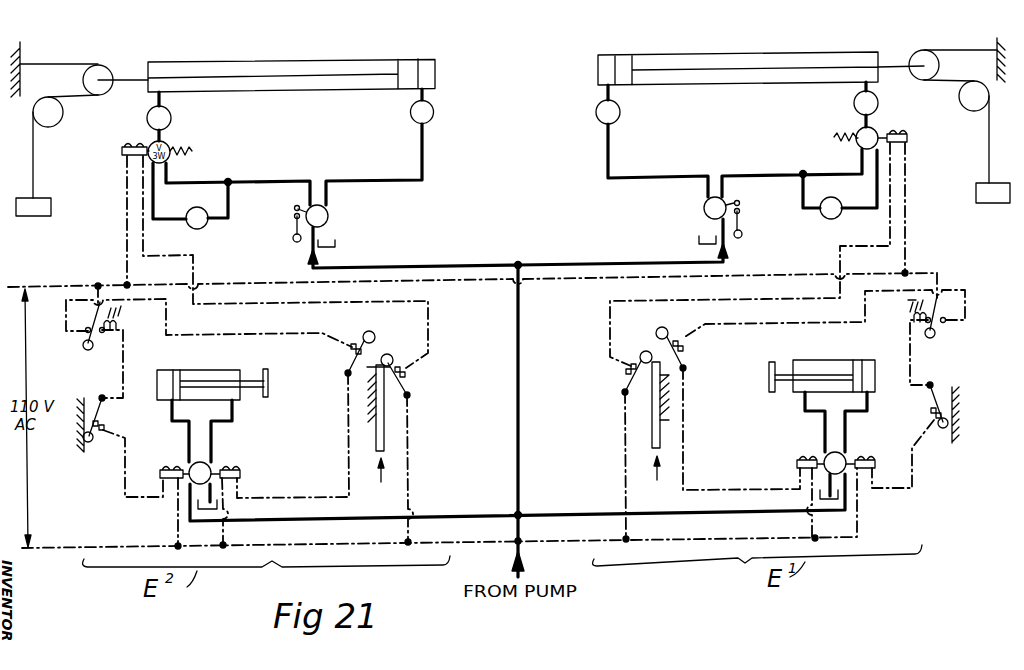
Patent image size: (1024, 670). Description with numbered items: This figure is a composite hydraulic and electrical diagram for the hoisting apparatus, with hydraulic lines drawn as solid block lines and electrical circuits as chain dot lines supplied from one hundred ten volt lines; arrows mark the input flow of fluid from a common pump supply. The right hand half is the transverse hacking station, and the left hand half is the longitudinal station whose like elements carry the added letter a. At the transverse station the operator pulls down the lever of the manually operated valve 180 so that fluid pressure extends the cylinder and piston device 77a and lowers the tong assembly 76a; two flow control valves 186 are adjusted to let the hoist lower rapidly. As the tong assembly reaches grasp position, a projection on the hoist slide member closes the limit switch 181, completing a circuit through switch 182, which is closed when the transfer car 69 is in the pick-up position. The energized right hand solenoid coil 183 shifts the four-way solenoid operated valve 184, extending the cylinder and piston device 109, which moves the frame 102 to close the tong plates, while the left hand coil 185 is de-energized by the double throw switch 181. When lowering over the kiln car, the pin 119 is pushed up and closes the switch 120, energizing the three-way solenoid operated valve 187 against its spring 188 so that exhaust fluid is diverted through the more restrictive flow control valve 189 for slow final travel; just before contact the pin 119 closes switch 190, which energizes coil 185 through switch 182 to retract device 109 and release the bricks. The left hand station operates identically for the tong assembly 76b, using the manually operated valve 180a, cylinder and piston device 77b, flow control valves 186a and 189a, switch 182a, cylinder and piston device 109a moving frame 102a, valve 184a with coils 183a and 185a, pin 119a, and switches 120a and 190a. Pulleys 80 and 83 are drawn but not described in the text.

The transfer car 69 is at (22, 50).
The pulley 80 is at (100, 78).
The pulley 83 is at (57, 112).
The tong assembly 76a is at (983, 183).
The tong assembly 76b is at (40, 198).
The cylinder and piston device 77a is at (733, 79).
The cylinder and piston device 77b is at (285, 88).
The flow control valve 186 is at (621, 113).
The flow control valve 186a is at (172, 118).
The three-way solenoid operated valve 187 is at (879, 131).
The spring 188 is at (851, 146).
The flow control valve 189 is at (823, 215).
The flow control valve 189a is at (201, 228).
The manually operated valve 180 is at (704, 207).
The manually operated valve 180a is at (328, 213).
The switch 182 is at (942, 331).
The switch 182a is at (84, 337).
The limit switch 181 is at (916, 452).
The cylinder and piston device 109 is at (836, 363).
The cylinder and piston device 109a is at (213, 370).
The frame 102 is at (767, 368).
The frame 102a is at (269, 384).
The right hand solenoid coil 183 is at (868, 461).
The right hand solenoid coil 183a is at (173, 469).
The four-way solenoid operated valve 184 is at (845, 455).
The four-way solenoid operated valve 184a is at (207, 465).
The left hand coil 185 is at (812, 456).
The left hand coil 185a is at (233, 469).
The switch 190 is at (667, 329).
The switch 190a is at (362, 339).
The switch 120 is at (637, 353).
The switch 120a is at (409, 373).
The pin 119 is at (661, 434).
The pin 119a is at (386, 441).